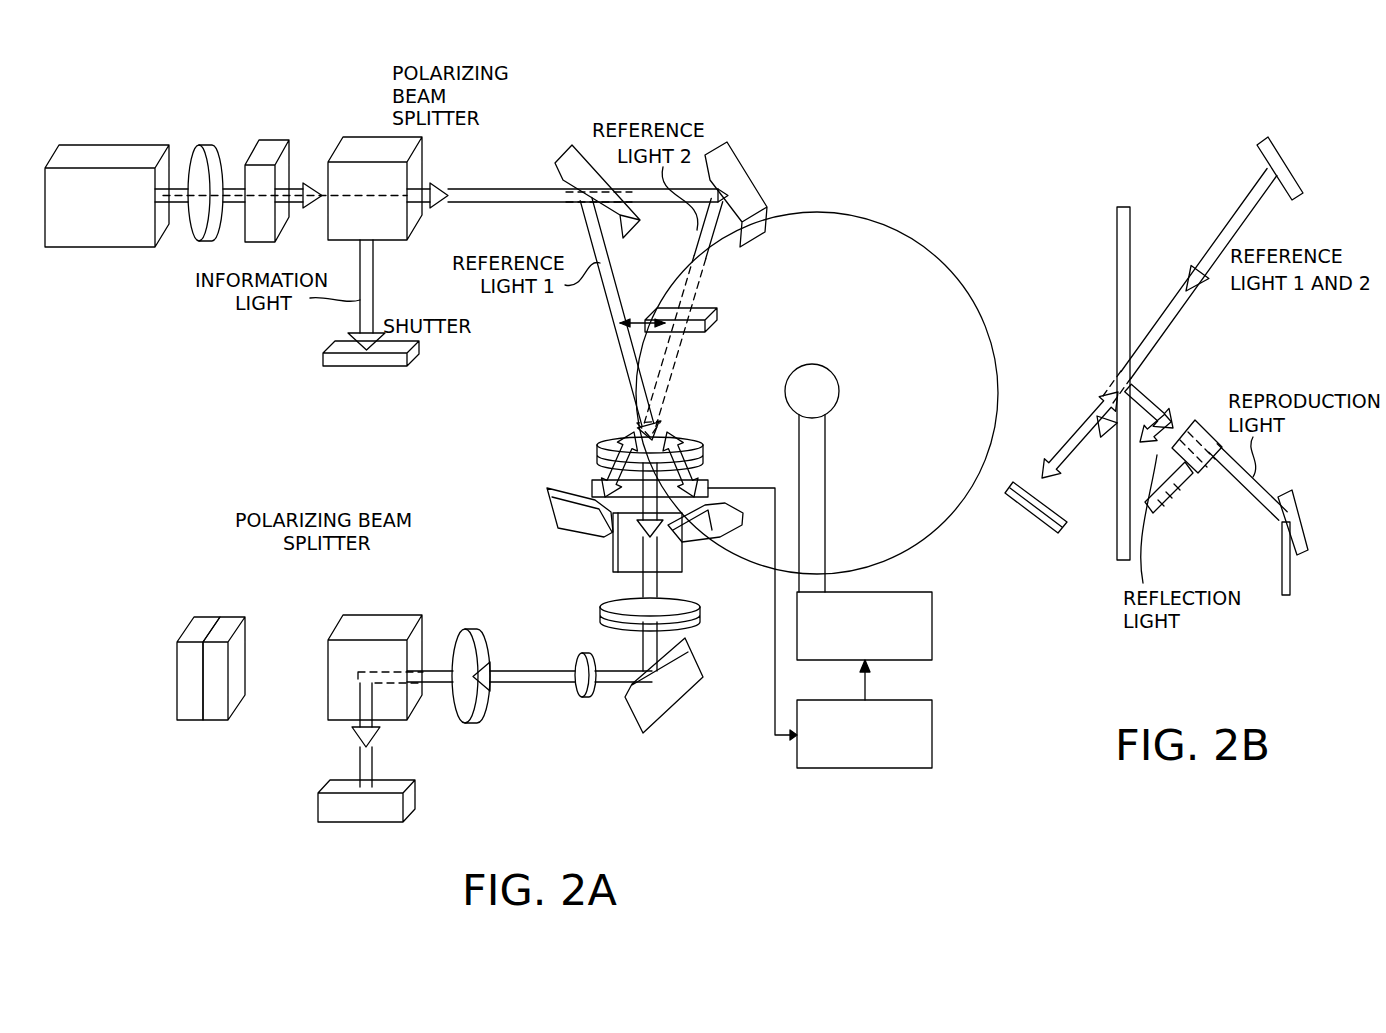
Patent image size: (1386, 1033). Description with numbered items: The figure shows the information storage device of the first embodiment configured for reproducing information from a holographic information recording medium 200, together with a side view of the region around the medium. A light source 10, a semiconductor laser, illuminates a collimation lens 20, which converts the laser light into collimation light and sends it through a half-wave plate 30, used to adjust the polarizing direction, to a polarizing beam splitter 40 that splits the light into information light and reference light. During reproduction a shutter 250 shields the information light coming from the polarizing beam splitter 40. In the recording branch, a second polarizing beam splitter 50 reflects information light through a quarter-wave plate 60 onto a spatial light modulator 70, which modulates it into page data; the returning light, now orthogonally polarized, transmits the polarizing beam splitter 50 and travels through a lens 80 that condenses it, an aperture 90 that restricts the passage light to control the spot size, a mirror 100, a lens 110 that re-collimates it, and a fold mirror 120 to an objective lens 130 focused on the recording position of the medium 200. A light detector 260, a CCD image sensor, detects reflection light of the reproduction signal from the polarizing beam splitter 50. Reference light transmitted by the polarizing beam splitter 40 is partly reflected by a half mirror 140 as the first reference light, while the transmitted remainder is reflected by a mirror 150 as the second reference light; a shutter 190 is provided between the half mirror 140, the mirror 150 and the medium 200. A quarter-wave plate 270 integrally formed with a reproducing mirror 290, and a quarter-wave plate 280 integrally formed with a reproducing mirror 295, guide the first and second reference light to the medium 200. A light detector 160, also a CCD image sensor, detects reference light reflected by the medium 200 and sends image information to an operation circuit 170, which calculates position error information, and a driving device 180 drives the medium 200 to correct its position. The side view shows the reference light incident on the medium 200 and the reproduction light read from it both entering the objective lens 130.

In FIG. 2A, the light source 10 is at (121, 140).
In FIG. 2A, the collimation lens 20 is at (206, 144).
In FIG. 2A, the λ/2 plate 30 is at (272, 140).
In FIG. 2A, the polarizing beam splitter 40 is at (363, 137).
In FIG. 2A, the polarizing beam splitter 50 is at (355, 615).
In FIG. 2A, the λ/4 plate 60 is at (233, 617).
In FIG. 2A, the spatial light modulator 70 is at (200, 617).
In FIG. 2A, the lens 80 is at (470, 725).
In FIG. 2A, the aperture 90 is at (583, 698).
In FIG. 2A, the mirror 100 is at (628, 733).
In FIG. 2A, the lens 110 is at (600, 607).
In FIG. 2A, the fold mirror 120 is at (612, 557).
In FIG. 2B, the fold mirror 120 is at (1300, 512).
In FIG. 2A, the objective lens 130 is at (596, 458).
In FIG. 2B, the objective lens 130 is at (1205, 420).
In FIG. 2A, the half mirror 140 is at (577, 143).
In FIG. 2B, the half mirror 140 is at (1305, 127).
In FIG. 2A, the mirror 150 is at (740, 140).
In FIG. 2B, the mirror 150 is at (1277, 140).
In FIG. 2A, the light detector 160 is at (596, 490).
In FIG. 2B, the light detector 160 is at (1178, 500).
In FIG. 2A, the operation circuit 170 is at (932, 737).
In FIG. 2A, the driving device 180 is at (932, 647).
In FIG. 2A, the shutter 190 is at (657, 298).
In FIG. 2A, the information recording medium 200 is at (827, 213).
In FIG. 2B, the information recording medium 200 is at (1117, 252).
In FIG. 2A, the shutter 250 is at (323, 355).
In FIG. 2A, the light detector 260 is at (318, 803).
In FIG. 2A, the λ/4 plate 270 is at (737, 527).
In FIG. 2A, the λ/4 plate 280 is at (550, 487).
In FIG. 2A, the reproducing mirror 290 is at (758, 666).
In FIG. 2B, the reproducing mirror 290 is at (1028, 550).
In FIG. 2A, the reproducing mirror 295 is at (360, 481).
In FIG. 2B, the reproducing mirror 295 is at (1012, 508).